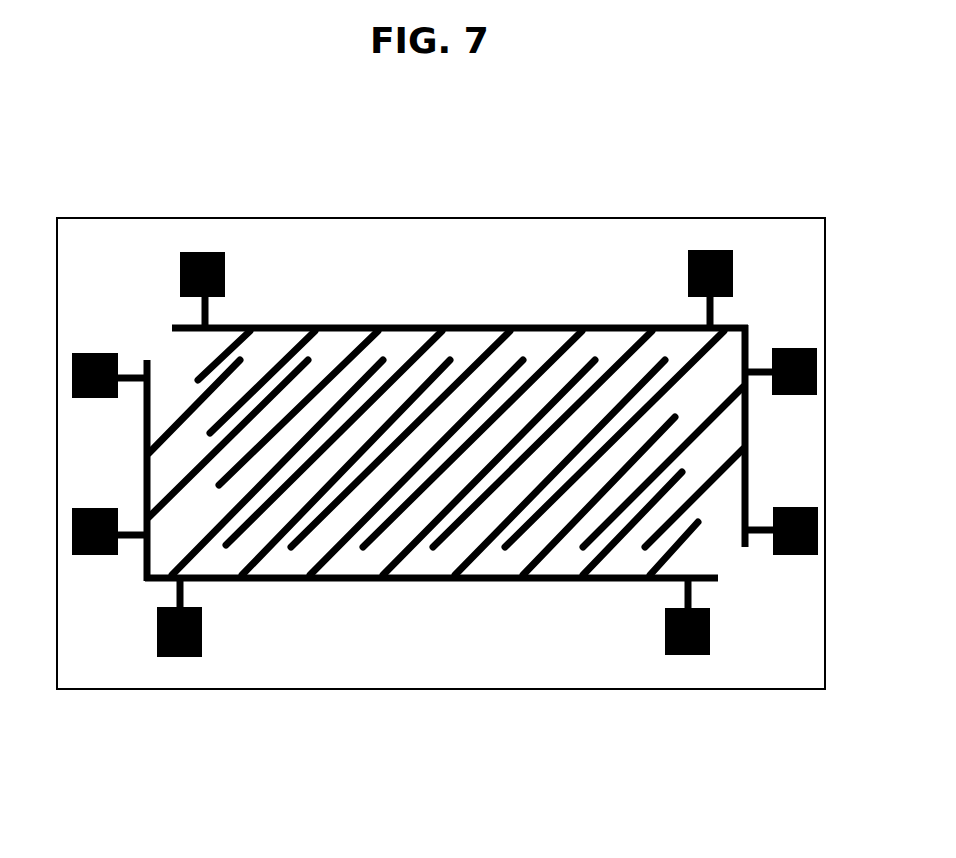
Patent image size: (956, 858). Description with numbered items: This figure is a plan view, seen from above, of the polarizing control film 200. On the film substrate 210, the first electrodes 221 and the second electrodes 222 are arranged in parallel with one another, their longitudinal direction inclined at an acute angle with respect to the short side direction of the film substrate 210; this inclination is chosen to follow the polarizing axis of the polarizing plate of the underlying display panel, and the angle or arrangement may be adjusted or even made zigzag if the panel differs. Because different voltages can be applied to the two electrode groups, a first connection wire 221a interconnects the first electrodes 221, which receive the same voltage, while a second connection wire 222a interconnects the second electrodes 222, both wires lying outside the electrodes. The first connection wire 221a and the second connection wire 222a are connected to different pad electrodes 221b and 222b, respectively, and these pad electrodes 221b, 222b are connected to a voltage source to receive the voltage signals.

The polarizing control film 200 is at (198, 162).
The film substrate 210 is at (95, 240).
The first electrode 221 is at (415, 350).
The first connection wire 221a is at (472, 328).
The pad electrode 221b is at (712, 250).
The second electrode 222 is at (407, 552).
The second connection wire 222a is at (350, 583).
The pad electrode 222b is at (176, 657).